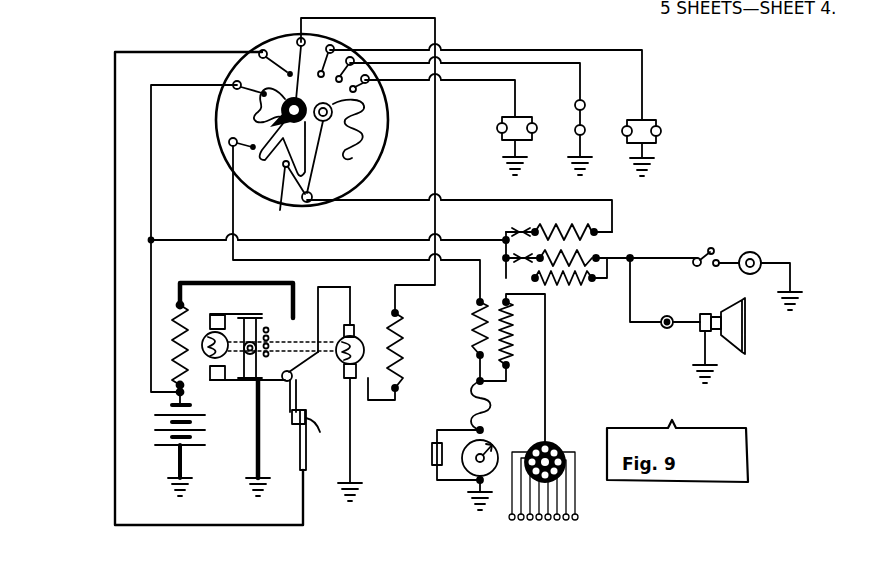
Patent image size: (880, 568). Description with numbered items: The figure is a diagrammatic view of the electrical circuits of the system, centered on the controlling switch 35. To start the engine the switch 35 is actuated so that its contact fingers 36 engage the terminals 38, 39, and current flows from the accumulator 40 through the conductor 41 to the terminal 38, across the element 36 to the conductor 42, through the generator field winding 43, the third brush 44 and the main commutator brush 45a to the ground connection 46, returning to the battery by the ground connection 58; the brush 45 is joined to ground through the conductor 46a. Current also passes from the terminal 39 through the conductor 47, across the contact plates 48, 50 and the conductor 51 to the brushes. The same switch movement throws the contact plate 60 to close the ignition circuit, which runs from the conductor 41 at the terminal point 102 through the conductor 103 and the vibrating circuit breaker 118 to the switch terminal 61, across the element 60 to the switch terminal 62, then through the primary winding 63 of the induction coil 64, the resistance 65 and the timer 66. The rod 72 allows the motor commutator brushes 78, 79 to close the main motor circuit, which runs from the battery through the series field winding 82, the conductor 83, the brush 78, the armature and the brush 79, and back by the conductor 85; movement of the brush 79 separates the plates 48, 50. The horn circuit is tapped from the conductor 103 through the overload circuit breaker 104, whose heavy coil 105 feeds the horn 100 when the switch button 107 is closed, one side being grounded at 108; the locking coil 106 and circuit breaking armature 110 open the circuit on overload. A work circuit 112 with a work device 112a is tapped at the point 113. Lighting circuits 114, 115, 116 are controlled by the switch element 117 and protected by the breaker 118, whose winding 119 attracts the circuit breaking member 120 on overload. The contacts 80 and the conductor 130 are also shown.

The controlling switch 35 is at (217, 103).
The contact fingers 36 is at (268, 108).
The terminal 38 is at (266, 90).
The terminal 39 is at (287, 62).
The accumulator 40 is at (166, 440).
The conductor 41 is at (149, 158).
The conductor 42 is at (437, 30).
The generator field winding 43 is at (398, 352).
The third brush 44 is at (356, 382).
The main commutator brush 45 is at (342, 380).
The main commutator brush 45a is at (354, 328).
The ground connection 46 is at (356, 488).
The conductor 46a is at (350, 451).
The conductor 47 is at (114, 258).
The contact plate 48 is at (311, 425).
The contact plate 50 is at (292, 420).
The conductor 51 is at (322, 287).
The ground connection 58 is at (168, 482).
The contact plate 60 is at (282, 181).
The switch terminal 61 is at (281, 210).
The switch terminal 62 is at (230, 160).
The primary winding 63 is at (478, 325).
The induction coil 64 is at (489, 345).
The resistance 65 is at (470, 407).
The timer 66 is at (484, 470).
The rod 72 is at (246, 335).
The commutator brush 78 is at (246, 330).
The commutator brush 79 is at (248, 382).
The relay contacts 80 is at (270, 340).
The series field winding 82 is at (172, 310).
The conductor 83 is at (230, 284).
The conductor 85 is at (255, 452).
The horn 100 is at (730, 336).
The terminal point 102 is at (153, 238).
The conductor 103 is at (316, 238).
The overload circuit breaker 104 is at (598, 260).
The heavy coil 105 is at (598, 258).
The locking coil 106 is at (562, 284).
The switch button 107 is at (666, 330).
The ground 108 is at (700, 374).
The circuit breaking armature 110 is at (504, 247).
The work circuit 112 is at (704, 262).
The work device 112a is at (760, 256).
The point 113 is at (632, 262).
The lighting circuit 114 is at (642, 80).
The lighting circuit 115 is at (580, 88).
The lighting circuit 116 is at (515, 97).
The switch element 117 is at (338, 119).
The vibrating circuit breaker 118 is at (572, 228).
The winding 119 is at (548, 226).
The circuit breaking member 120 is at (518, 230).
The conductor 130 is at (124, 565).